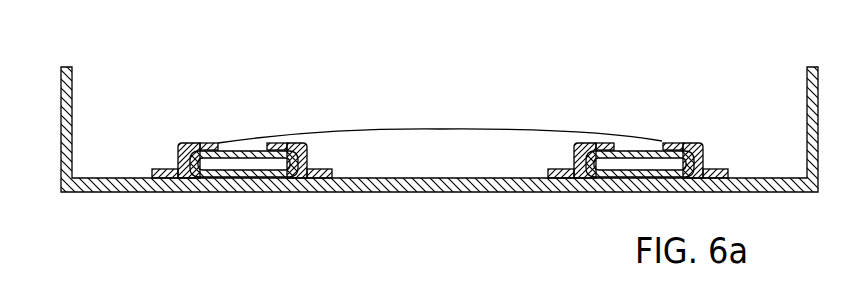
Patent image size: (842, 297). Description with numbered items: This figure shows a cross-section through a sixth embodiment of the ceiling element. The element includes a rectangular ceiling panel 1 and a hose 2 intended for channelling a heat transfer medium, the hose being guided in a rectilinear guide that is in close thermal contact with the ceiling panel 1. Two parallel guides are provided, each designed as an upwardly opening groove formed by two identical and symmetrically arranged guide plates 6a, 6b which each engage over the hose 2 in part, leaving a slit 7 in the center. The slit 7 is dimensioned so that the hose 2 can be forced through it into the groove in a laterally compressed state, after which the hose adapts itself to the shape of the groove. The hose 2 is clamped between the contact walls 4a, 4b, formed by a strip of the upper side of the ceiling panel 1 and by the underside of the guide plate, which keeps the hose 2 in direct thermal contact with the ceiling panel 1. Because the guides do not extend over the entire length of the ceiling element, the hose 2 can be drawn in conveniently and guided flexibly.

The ceiling panel 1 is at (431, 185).
The hose 2 is at (438, 130).
The contact wall 4a is at (231, 180).
The contact wall 4b is at (205, 143).
The guide plate 6a is at (183, 142).
The guide plate 6b is at (303, 143).
The slit 7 is at (622, 141).